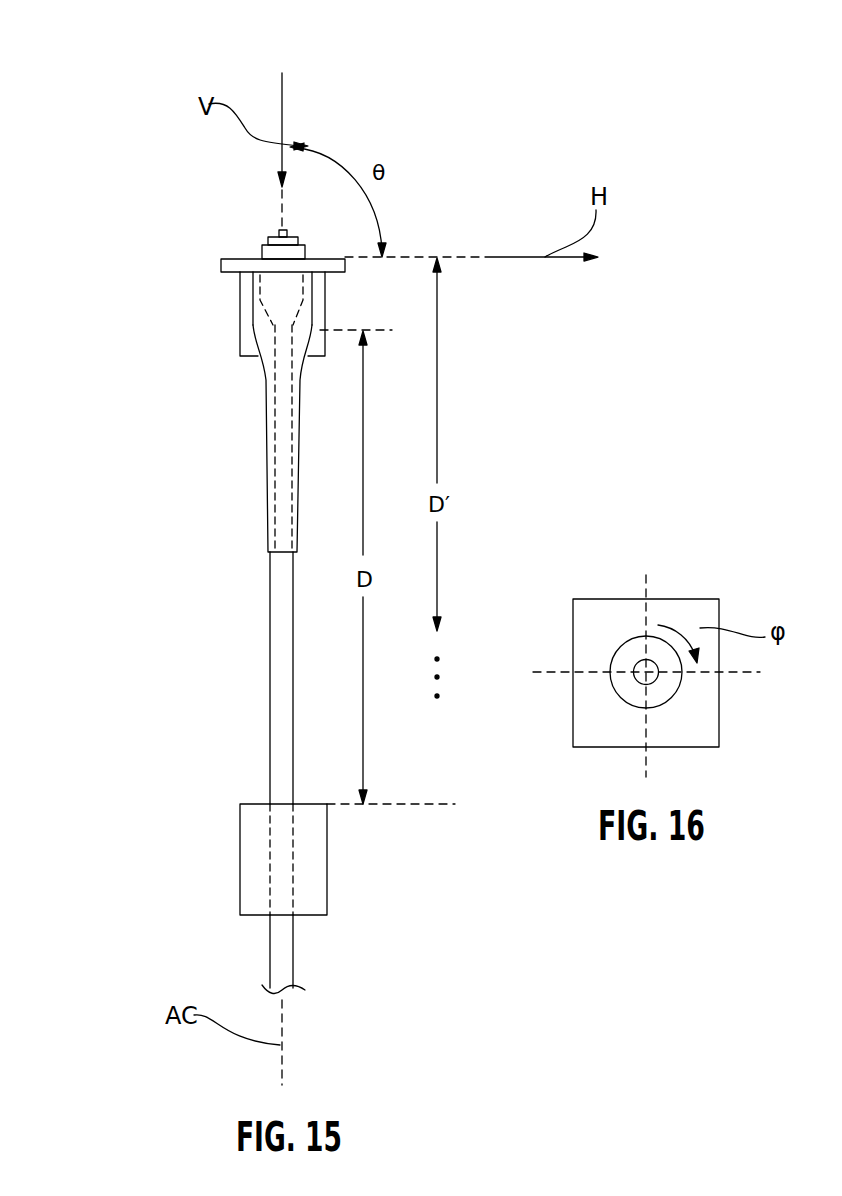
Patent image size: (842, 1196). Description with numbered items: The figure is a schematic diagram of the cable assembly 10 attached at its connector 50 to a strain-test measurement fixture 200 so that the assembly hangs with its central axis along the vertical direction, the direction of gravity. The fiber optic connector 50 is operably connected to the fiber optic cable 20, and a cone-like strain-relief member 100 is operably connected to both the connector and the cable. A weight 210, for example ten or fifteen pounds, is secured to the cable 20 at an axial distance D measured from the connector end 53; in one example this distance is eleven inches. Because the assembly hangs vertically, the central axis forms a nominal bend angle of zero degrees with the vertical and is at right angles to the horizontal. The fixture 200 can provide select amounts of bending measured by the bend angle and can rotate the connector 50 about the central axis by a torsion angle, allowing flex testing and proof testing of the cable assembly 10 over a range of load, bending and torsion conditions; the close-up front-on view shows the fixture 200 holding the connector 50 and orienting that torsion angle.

In FIG. 15, the cable assembly 10 is at (128, 210).
In FIG. 15, the strain-test measurement fixture 200 is at (192, 255).
In FIG. 16, the strain-test measurement fixture 200 is at (683, 570).
In FIG. 15, the fiber optic connector 50 is at (250, 300).
In FIG. 16, the fiber optic connector 50 is at (622, 653).
In FIG. 15, the connector end 53 is at (245, 345).
In FIG. 15, the strain-relief member 100 is at (265, 470).
In FIG. 15, the fiber optic cable 20 is at (270, 743).
In FIG. 15, the weight 210 is at (240, 848).